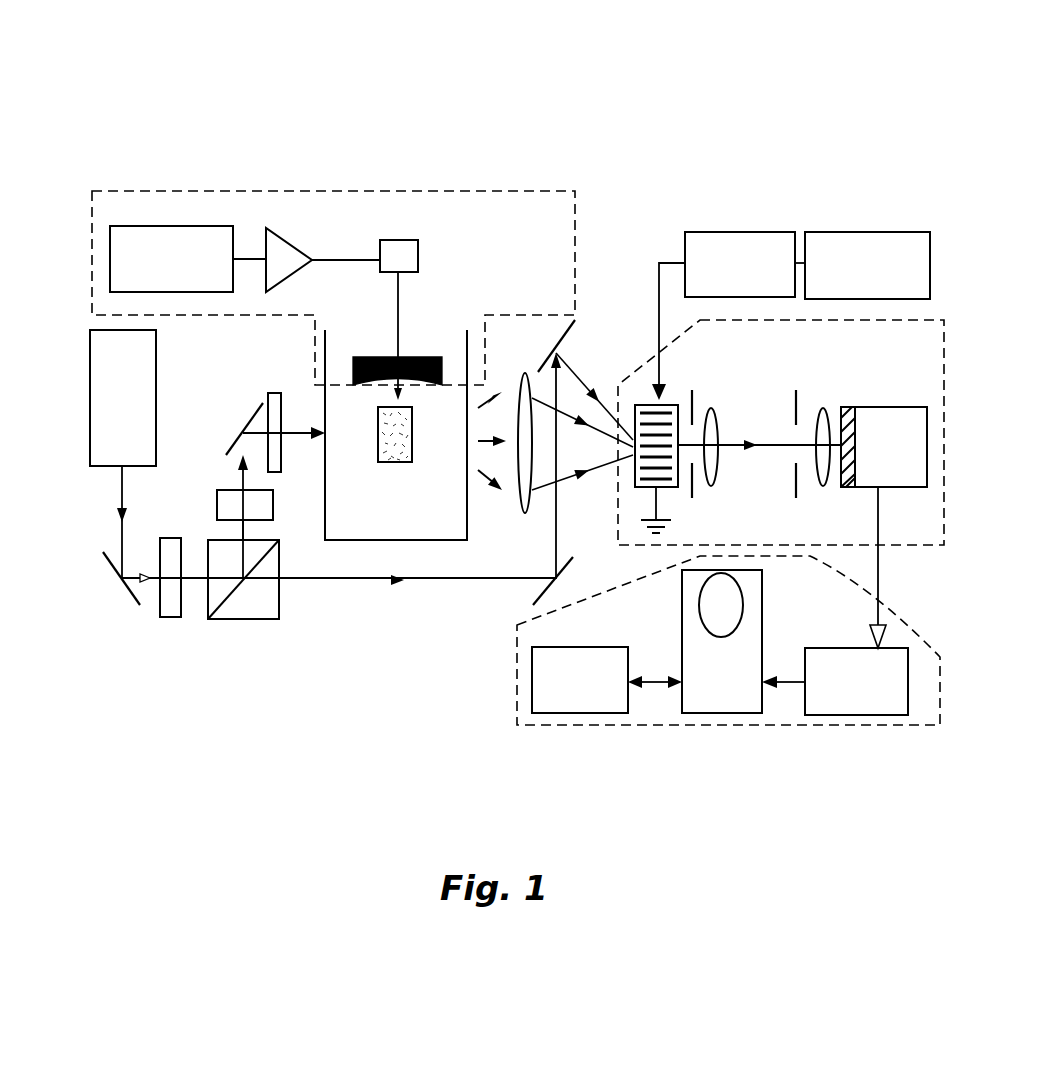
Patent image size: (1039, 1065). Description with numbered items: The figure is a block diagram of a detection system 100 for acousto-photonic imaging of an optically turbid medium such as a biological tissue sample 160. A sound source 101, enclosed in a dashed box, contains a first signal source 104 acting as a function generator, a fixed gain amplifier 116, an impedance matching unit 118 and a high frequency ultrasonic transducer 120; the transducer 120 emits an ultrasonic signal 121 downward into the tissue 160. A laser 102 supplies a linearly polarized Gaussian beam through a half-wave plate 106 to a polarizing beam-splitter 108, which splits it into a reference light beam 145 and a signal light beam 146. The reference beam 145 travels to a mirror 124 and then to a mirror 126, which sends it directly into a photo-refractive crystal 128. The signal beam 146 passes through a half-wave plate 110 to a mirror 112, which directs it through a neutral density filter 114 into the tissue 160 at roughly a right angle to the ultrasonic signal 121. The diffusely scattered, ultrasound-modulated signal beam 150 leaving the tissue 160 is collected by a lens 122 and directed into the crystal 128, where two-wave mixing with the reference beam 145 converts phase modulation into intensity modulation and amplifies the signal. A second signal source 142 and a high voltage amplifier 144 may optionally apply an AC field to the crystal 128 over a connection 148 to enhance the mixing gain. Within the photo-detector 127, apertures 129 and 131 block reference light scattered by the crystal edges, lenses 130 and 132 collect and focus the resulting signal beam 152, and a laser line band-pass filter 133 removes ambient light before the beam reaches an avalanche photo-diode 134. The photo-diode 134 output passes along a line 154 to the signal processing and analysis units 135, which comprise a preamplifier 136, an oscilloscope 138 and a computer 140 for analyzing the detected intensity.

The detection system 100 is at (76, 166).
The sound source 101 is at (468, 190).
The optical signal source 102 is at (138, 367).
The first signal source 104 is at (168, 282).
The half-wave plate 106 is at (177, 622).
The polarizing beam-splitter 108 is at (260, 625).
The half-wave plate 110 is at (223, 490).
The mirror 112 is at (237, 443).
The neutral density filter 114 is at (285, 418).
The amplifier 116 is at (290, 247).
The impedance matching unit 118 is at (418, 259).
The high frequency ultrasonic transducer 120 is at (425, 352).
The ultrasonic signal 121 is at (398, 304).
The lens 122 is at (524, 513).
The mirror 124 is at (541, 600).
The mirror 126 is at (549, 356).
The photo-detector 127 is at (948, 346).
The photo-refractive crystal 128 is at (678, 397).
The aperture 129 is at (692, 390).
The lens 130 is at (712, 486).
The aperture 131 is at (796, 390).
The lens 132 is at (824, 486).
The laser line band-pass filter 133 is at (851, 405).
The photo-diode 134 is at (906, 482).
The signal processing and analysis units 135 is at (946, 660).
The preamplifier 136 is at (872, 711).
The oscilloscope 138 is at (738, 711).
The computer 140 is at (592, 708).
The second signal source 142 is at (878, 290).
The high voltage amplifier 144 is at (760, 289).
The reference light beam 145 is at (577, 366).
The signal light beam 146 is at (246, 528).
The HV connection 148 is at (657, 311).
The diffusely scattered signal beam 150 is at (585, 474).
The signal beam 152 is at (734, 443).
The APD output 154 is at (884, 592).
The biological tissue sample 160 is at (416, 459).